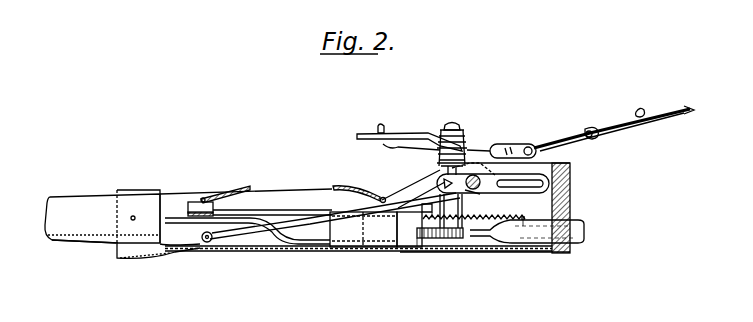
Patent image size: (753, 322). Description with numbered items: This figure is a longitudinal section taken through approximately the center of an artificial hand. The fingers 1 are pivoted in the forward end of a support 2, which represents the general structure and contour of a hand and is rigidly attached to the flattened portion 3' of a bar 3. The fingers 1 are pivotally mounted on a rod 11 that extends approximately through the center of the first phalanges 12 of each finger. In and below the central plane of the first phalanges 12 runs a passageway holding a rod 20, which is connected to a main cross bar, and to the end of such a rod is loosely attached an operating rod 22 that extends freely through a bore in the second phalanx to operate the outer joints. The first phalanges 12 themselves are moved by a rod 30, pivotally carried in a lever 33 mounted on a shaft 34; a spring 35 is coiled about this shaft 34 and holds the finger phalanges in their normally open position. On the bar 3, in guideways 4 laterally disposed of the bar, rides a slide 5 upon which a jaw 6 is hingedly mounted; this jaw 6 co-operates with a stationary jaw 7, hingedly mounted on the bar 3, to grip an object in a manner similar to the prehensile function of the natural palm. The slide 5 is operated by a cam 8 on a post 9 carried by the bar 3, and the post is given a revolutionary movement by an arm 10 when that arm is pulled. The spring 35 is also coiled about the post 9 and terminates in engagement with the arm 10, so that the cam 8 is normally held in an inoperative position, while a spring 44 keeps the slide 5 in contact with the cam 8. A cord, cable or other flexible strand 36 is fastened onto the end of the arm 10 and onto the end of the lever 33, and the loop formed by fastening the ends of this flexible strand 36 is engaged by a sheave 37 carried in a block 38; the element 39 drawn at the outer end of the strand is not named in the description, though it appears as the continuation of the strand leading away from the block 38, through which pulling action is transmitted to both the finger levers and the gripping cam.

The fingers 1 is at (82, 251).
The support 2 is at (202, 250).
The bar 3 is at (543, 232).
The flattened portion 3' is at (335, 234).
The guideways 4 is at (270, 208).
The slide 5 is at (406, 232).
The jaw 6 is at (358, 193).
The stationary jaw 7 is at (208, 196).
The cam 8 is at (430, 240).
The post 9 is at (458, 232).
The arm 10 is at (372, 137).
The rod 11 is at (134, 216).
The first phalanges 12 is at (102, 216).
The rod 20 is at (180, 254).
The operating rod 22 is at (210, 244).
The rod 30 is at (302, 246).
The lever 33 is at (572, 172).
The shaft 34 is at (500, 268).
The spring 35 is at (468, 150).
The flexible strand 36 is at (500, 148).
The sheave 37 is at (586, 130).
The block 38 is at (533, 150).
The cord 39 is at (636, 122).
The spring 44 is at (473, 196).